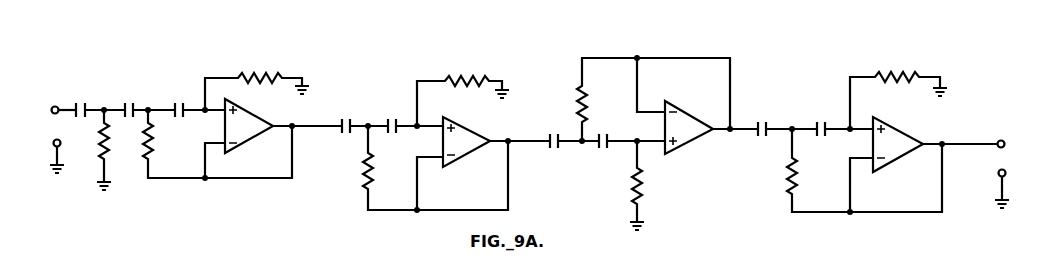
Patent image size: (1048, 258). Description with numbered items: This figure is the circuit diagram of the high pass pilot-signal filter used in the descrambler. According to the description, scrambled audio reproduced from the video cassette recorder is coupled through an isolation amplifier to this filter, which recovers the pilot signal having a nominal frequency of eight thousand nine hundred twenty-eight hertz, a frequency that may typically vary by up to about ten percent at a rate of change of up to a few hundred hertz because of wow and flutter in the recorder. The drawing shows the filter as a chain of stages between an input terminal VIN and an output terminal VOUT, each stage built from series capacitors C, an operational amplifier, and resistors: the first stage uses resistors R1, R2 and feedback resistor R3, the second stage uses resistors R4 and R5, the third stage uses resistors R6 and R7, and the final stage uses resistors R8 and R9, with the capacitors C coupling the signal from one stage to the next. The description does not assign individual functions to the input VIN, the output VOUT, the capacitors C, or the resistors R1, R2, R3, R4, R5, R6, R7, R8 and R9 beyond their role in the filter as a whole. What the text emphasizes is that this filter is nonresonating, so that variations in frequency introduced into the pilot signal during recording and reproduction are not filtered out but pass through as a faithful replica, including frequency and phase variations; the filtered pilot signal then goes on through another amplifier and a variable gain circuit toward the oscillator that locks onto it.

The input voltage terminal VIN is at (46, 131).
The output voltage terminal VOUT is at (984, 165).
The capacitor C is at (451, 127).
The resistor R1 is at (114, 150).
The resistor R2 is at (217, 145).
The resistor R3 is at (257, 79).
The resistor R4 is at (421, 169).
The resistor R5 is at (463, 88).
The resistor R6 is at (640, 98).
The resistor R7 is at (647, 185).
The resistor R8 is at (850, 172).
The resistor R9 is at (898, 88).